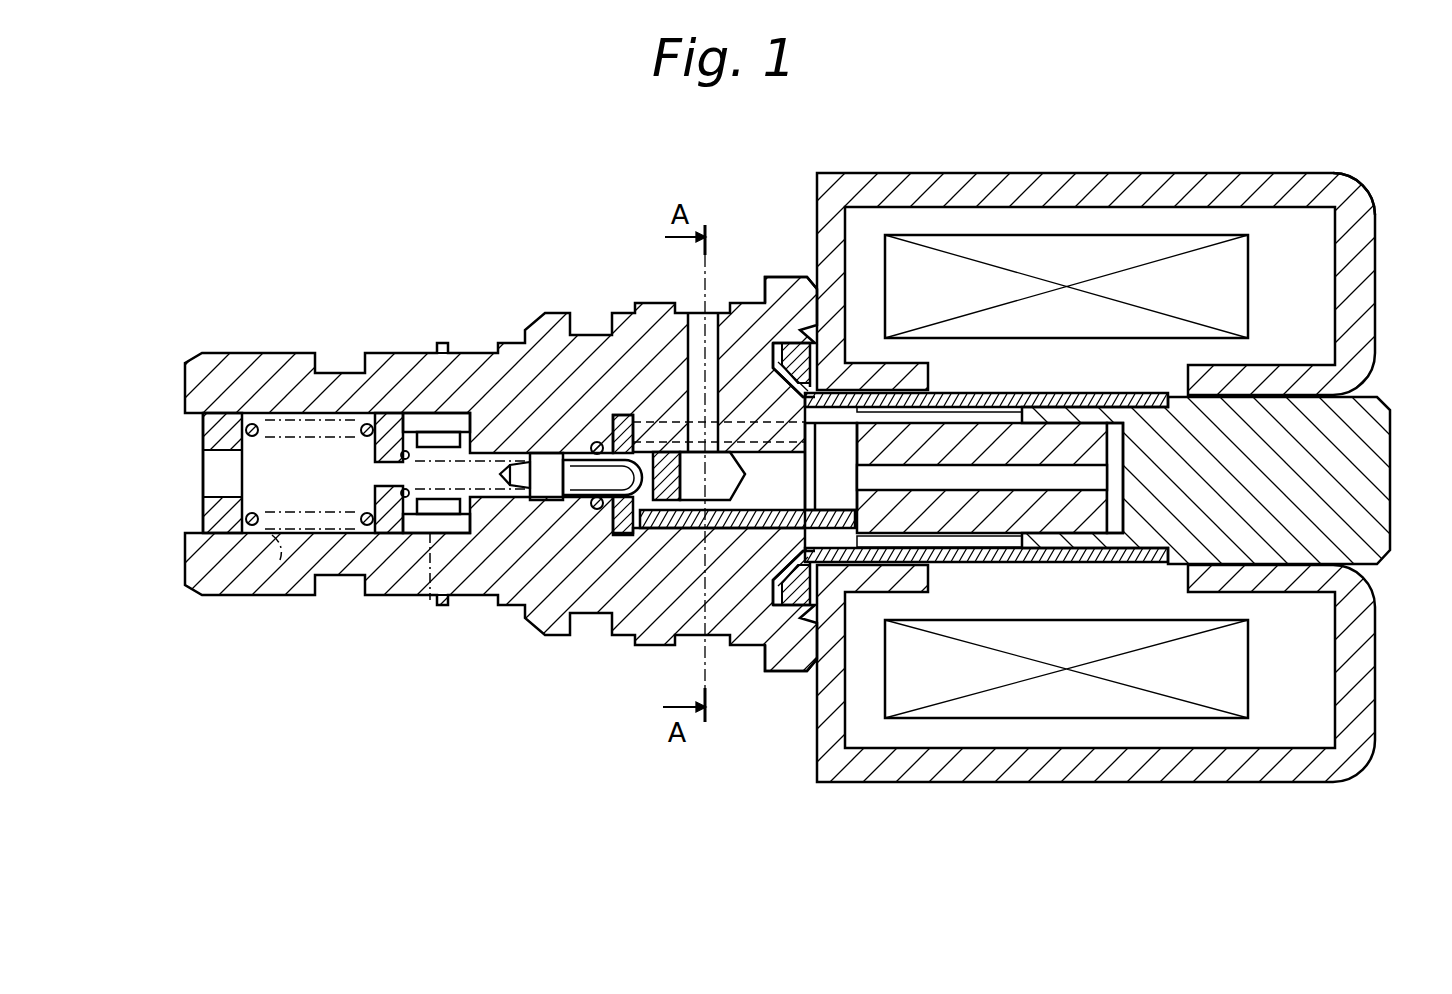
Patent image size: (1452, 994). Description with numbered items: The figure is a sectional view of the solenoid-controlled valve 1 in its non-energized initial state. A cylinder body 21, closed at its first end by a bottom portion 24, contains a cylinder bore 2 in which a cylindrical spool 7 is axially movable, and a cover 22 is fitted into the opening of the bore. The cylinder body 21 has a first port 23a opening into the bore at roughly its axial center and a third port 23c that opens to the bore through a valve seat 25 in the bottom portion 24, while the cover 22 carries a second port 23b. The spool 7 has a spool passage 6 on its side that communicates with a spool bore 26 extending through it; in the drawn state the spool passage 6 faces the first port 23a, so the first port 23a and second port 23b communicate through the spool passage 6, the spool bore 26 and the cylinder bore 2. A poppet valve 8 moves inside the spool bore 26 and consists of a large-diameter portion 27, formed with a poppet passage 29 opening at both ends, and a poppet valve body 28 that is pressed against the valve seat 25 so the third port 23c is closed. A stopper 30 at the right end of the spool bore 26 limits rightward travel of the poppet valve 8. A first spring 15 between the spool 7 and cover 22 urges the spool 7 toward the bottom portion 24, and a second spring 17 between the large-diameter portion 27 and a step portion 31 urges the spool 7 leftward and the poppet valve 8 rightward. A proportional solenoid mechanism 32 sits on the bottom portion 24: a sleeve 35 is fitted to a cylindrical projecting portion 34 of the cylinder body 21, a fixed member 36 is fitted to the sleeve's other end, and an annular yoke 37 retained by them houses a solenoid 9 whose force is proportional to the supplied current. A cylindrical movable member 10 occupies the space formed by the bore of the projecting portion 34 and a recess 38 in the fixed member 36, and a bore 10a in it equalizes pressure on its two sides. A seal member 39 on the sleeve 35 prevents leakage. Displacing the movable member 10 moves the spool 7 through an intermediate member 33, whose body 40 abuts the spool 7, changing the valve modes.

The solenoid-controlled valve 1 is at (1272, 165).
The cylinder bore 2 is at (330, 420).
The spool passage 6 is at (425, 440).
The spool 7 is at (500, 430).
The poppet valve 8 is at (600, 413).
The solenoid 9 is at (1228, 690).
The movable member 10 is at (990, 645).
The bore 10a is at (1045, 490).
The first spring 15 is at (272, 535).
The second spring 17 is at (430, 595).
The cylinder body 21 is at (570, 415).
The cover 22 is at (212, 522).
The first port 23a is at (450, 350).
The second port 23b is at (218, 460).
The third port 23c is at (712, 330).
The bottom portion 24 is at (750, 532).
The valve seat 25 is at (612, 598).
The spool bore 26 is at (478, 560).
The large-diameter portion 27 is at (540, 505).
The poppet valve body 28 is at (572, 500).
The poppet passage 29 is at (557, 455).
The stopper 30 is at (620, 415).
The step portion 31 is at (390, 560).
The proportional solenoid mechanism 32 is at (986, 165).
The intermediate member 33 is at (790, 608).
The cylindrical projecting portion 34 is at (852, 566).
The sleeve 35 is at (968, 563).
The fixed member 36 is at (1385, 545).
The yoke 37 is at (1182, 765).
The recess 38 is at (1075, 520).
The seal member 39 is at (802, 615).
The body 40 is at (662, 452).